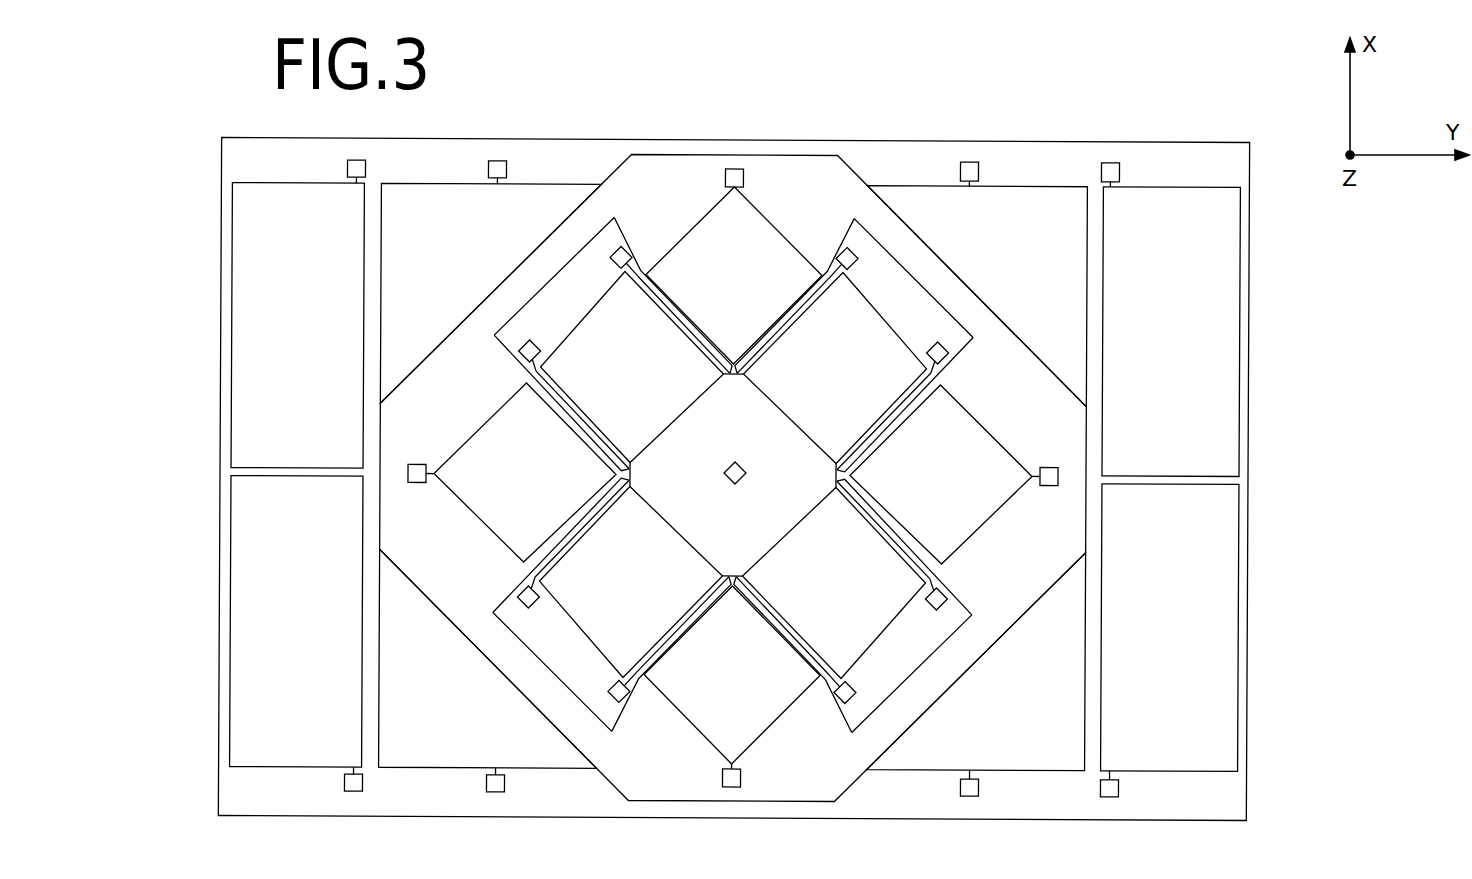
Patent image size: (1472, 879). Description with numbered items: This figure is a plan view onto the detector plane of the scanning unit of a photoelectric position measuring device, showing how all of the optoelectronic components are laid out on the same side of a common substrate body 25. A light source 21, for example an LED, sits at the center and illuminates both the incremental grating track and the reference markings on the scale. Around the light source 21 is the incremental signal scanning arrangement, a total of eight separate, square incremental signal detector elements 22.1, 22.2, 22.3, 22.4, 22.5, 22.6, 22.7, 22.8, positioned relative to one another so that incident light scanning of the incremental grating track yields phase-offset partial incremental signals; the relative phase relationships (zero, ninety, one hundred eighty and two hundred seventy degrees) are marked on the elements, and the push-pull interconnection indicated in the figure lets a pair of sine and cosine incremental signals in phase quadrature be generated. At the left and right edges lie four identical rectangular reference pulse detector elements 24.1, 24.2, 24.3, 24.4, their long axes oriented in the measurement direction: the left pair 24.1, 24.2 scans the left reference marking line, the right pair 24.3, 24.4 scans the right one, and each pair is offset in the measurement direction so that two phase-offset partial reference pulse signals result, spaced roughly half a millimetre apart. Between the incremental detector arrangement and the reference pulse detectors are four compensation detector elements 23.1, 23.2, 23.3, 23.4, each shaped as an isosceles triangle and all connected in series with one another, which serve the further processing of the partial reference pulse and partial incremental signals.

The light source 21 is at (735, 485).
The incremental signal detector element 22.1 is at (493, 457).
The incremental signal detector element 22.2 is at (628, 307).
The incremental signal detector element 22.3 is at (778, 263).
The incremental signal detector element 22.4 is at (883, 348).
The incremental signal detector element 22.5 is at (987, 458).
The incremental signal detector element 22.6 is at (885, 603).
The incremental signal detector element 22.7 is at (792, 682).
The incremental signal detector element 22.8 is at (578, 566).
The compensation detector element 23.1 is at (460, 745).
The compensation detector element 23.2 is at (449, 214).
The compensation detector element 23.3 is at (996, 208).
The compensation detector element 23.4 is at (1025, 745).
The reference pulse detector element 24.1 is at (250, 607).
The reference pulse detector element 24.2 is at (253, 383).
The reference pulse detector element 24.3 is at (1213, 343).
The reference pulse detector element 24.4 is at (1222, 628).
The substrate body 25 is at (1163, 167).